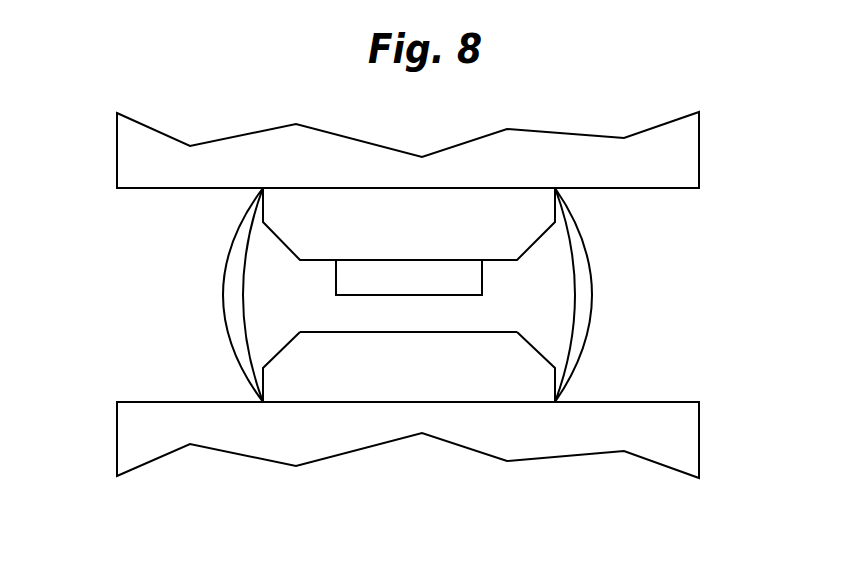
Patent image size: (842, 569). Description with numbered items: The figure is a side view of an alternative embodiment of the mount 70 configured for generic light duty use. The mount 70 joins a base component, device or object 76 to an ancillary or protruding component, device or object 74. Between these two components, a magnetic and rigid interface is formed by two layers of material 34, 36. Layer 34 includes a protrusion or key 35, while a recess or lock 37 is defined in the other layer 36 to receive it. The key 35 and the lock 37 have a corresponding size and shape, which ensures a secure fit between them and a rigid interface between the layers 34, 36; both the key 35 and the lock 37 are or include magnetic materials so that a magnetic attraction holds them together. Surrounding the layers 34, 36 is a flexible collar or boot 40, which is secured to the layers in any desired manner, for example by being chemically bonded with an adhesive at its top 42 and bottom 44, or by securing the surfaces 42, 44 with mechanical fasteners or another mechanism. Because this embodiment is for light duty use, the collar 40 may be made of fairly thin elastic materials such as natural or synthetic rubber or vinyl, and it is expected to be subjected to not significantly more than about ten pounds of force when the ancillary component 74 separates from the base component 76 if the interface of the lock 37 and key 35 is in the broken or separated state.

The mount 70 is at (120, 260).
The ancillary or protruding component 74 is at (688, 152).
The base component 76 is at (607, 443).
The layer of material 34 is at (350, 198).
The key 35 is at (434, 275).
The layer of material 36 is at (315, 390).
The lock 37 is at (419, 369).
The collar 40 is at (594, 294).
The top of collar 42 is at (557, 208).
The bottom of collar 44 is at (558, 382).